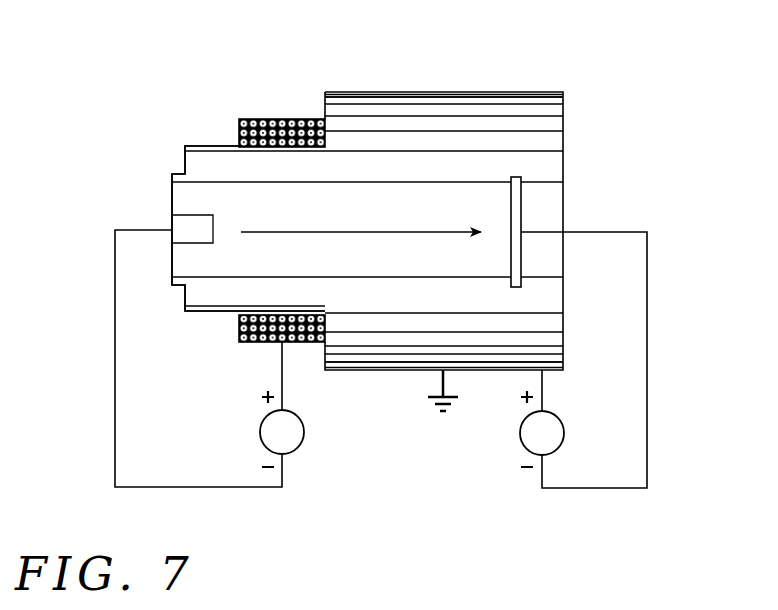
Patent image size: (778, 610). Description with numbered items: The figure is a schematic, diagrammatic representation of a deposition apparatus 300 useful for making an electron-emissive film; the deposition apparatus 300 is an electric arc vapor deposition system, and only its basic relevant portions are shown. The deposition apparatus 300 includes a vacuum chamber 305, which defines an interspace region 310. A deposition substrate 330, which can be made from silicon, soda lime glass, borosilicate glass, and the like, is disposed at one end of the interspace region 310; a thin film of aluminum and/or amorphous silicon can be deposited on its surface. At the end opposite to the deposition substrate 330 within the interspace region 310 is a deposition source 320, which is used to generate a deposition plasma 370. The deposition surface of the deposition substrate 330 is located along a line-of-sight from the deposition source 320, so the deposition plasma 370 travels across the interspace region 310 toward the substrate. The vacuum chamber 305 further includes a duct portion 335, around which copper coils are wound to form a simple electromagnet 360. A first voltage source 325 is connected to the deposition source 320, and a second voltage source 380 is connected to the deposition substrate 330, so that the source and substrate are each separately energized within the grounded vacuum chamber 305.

The deposition apparatus 300 is at (429, 537).
The vacuum chamber 305 is at (594, 150).
The interspace region 310 is at (430, 207).
The deposition source 320 is at (178, 223).
The first voltage source 325 is at (297, 447).
The deposition substrate 330 is at (511, 253).
The duct portion 335 is at (166, 146).
The electromagnet 360 is at (239, 119).
The deposition plasma 370 is at (357, 230).
The second voltage source 380 is at (558, 447).